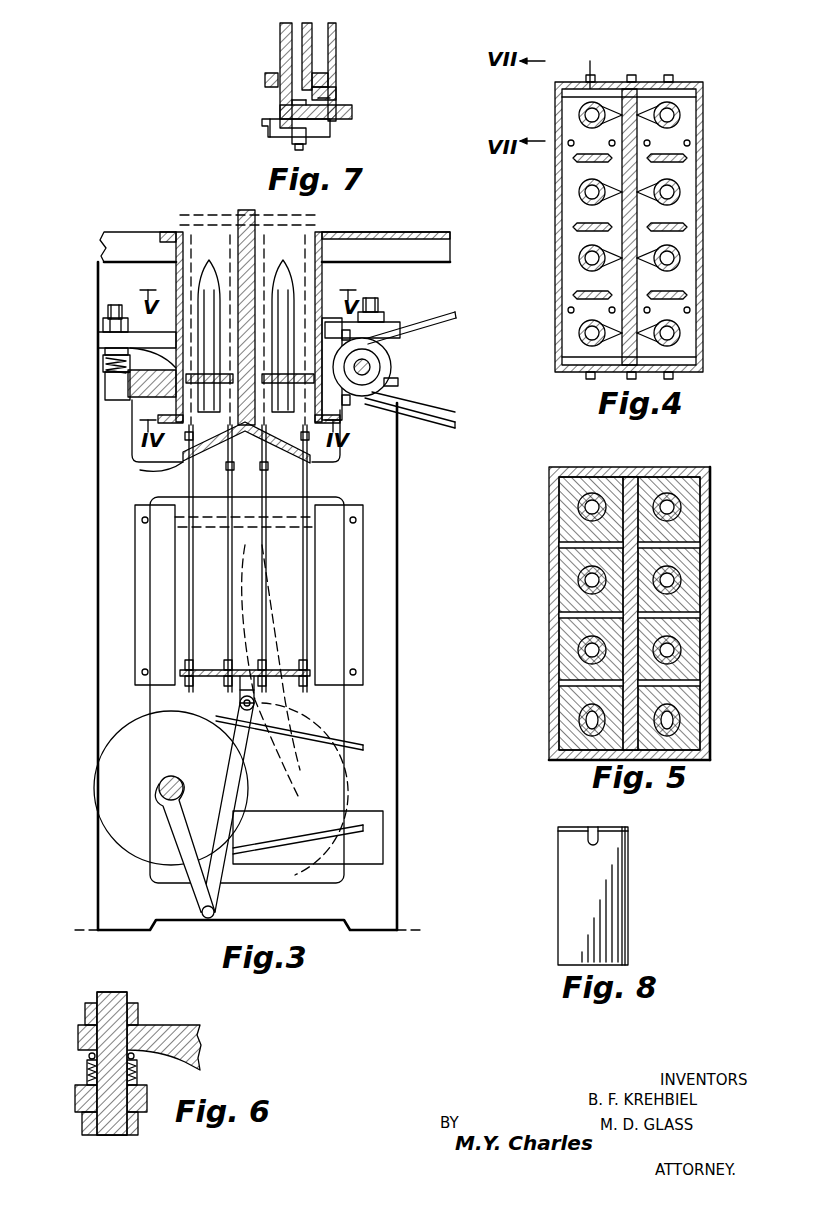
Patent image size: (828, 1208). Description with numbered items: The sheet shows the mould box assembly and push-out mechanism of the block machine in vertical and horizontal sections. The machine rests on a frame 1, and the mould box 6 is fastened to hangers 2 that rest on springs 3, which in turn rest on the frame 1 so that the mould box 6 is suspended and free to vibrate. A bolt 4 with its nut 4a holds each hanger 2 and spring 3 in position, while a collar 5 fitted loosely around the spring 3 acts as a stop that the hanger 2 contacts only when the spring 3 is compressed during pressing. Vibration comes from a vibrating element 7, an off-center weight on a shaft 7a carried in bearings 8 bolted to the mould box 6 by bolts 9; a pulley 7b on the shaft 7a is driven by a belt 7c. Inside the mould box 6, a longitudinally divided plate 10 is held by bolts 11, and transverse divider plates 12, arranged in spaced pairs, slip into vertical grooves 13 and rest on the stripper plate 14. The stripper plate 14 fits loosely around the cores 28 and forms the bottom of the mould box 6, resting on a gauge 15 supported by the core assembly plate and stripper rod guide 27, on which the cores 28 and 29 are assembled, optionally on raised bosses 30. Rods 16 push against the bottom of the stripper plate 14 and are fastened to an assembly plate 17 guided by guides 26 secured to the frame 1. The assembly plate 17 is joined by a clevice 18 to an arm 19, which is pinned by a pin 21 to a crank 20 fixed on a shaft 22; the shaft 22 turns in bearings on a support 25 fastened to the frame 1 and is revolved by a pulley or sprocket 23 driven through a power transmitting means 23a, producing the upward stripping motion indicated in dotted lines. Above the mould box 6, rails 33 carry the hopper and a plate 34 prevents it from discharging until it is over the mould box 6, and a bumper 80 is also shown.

In FIG. 3, the frame 1 is at (98, 540).
In FIG. 6, the frame 1 is at (75, 1097).
In FIG. 3, the hangers 2 is at (98, 338).
In FIG. 6, the hangers 2 is at (200, 1040).
In FIG. 3, the springs 3 is at (105, 351).
In FIG. 6, the springs 3 is at (88, 1056).
In FIG. 3, the bolt 4 is at (114, 305).
In FIG. 6, the bolt 4 is at (104, 992).
In FIG. 3, the nut 4a is at (103, 322).
In FIG. 6, the nut 4a is at (138, 1012).
In FIG. 3, the collar 5 is at (103, 366).
In FIG. 6, the collar 5 is at (87, 1073).
In FIG. 7, the mould box 6 is at (336, 48).
In FIG. 3, the mould box 6 is at (176, 272).
In FIG. 4, the mould box 6 is at (703, 360).
In FIG. 5, the mould box 6 is at (683, 467).
In FIG. 3, the vibrating element 7 is at (391, 370).
In FIG. 3, the shaft 7a is at (398, 384).
In FIG. 3, the pulley 7b is at (455, 403).
In FIG. 3, the belt 7c is at (476, 428).
In FIG. 3, the bearings 8 is at (352, 420).
In FIG. 3, the bolts 9 is at (348, 330).
In FIG. 3, the longitudinally divided plate 10 is at (248, 307).
In FIG. 4, the longitudinally divided plate 10 is at (650, 82).
In FIG. 5, the longitudinally divided plate 10 is at (640, 467).
In FIG. 4, the bolts 11 is at (640, 75).
In FIG. 5, the transverse divider plate 12 is at (559, 522).
In FIG. 8, the transverse divider plate 12 is at (558, 888).
In FIG. 5, the grooves 13 is at (559, 545).
In FIG. 7, the stripper plate 14 is at (315, 78).
In FIG. 3, the stripper plate 14 is at (212, 374).
In FIG. 7, the gauge 15 is at (337, 93).
In FIG. 3, the rods 16 is at (206, 490).
In FIG. 4, the rods 16 is at (609, 143).
In FIG. 3, the assembly plate 17 is at (208, 670).
In FIG. 3, the clevice 18 is at (240, 700).
In FIG. 3, the arm 19 is at (230, 750).
In FIG. 3, the crank 20 is at (165, 822).
In FIG. 3, the pin 21 is at (208, 918).
In FIG. 3, the shaft 22 is at (159, 786).
In FIG. 3, the pulley or sprocket 23 is at (96, 775).
In FIG. 3, the power transmitting means 23a is at (363, 747).
In FIG. 3, the support 25 is at (383, 840).
In FIG. 3, the guides 26 is at (135, 595).
In FIG. 7, the core assembly plate and stripper rod guide 27 is at (330, 140).
In FIG. 3, the core assembly plate and stripper rod guide 27 is at (140, 470).
In FIG. 4, the core assembly plate and stripper rod guide 27 is at (562, 350).
In FIG. 7, the cores 28 is at (280, 31).
In FIG. 3, the cores 28 is at (218, 252).
In FIG. 4, the cores 28 is at (580, 112).
In FIG. 5, the cores 28 is at (580, 502).
In FIG. 4, the cores 29 is at (573, 160).
In FIG. 3, the bosses 30 is at (132, 450).
In FIG. 3, the rails 33 is at (110, 220).
In FIG. 3, the plate 34 is at (390, 220).
In FIG. 3, the bumper 80 is at (105, 392).